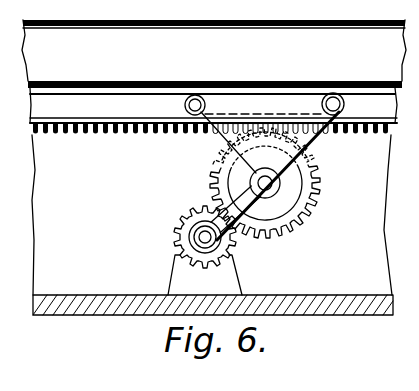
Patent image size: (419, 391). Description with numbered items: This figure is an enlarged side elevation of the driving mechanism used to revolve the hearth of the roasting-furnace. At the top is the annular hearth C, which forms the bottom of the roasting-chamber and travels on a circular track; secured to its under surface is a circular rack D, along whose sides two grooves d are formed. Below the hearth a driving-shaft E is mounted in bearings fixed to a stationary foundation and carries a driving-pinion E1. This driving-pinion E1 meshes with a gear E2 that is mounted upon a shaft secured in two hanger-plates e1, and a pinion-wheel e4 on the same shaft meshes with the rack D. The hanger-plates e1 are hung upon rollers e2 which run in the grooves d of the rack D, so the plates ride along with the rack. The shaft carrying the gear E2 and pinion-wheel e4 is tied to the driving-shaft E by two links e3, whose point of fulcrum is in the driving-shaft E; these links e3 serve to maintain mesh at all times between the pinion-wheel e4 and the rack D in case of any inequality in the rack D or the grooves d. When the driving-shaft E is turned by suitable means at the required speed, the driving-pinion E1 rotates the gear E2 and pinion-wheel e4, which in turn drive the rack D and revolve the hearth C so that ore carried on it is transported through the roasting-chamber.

The annular hearth C is at (214, 54).
The grooves d is at (213, 105).
The circular rack D is at (85, 137).
The rollers e2 is at (185, 106).
The gear E2 is at (265, 183).
The hanger-plates e1 is at (287, 140).
The links e3 is at (257, 213).
The pinion-wheel e4 is at (322, 182).
The driving-pinion E1 is at (198, 205).
The driving-shaft E is at (177, 228).